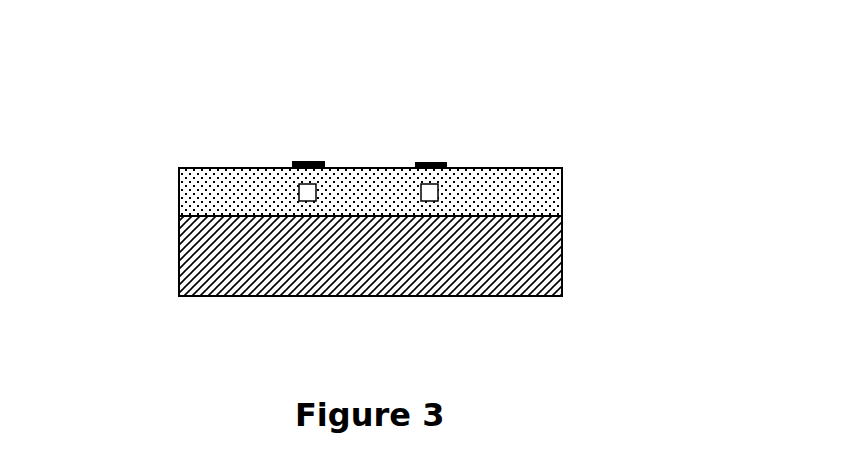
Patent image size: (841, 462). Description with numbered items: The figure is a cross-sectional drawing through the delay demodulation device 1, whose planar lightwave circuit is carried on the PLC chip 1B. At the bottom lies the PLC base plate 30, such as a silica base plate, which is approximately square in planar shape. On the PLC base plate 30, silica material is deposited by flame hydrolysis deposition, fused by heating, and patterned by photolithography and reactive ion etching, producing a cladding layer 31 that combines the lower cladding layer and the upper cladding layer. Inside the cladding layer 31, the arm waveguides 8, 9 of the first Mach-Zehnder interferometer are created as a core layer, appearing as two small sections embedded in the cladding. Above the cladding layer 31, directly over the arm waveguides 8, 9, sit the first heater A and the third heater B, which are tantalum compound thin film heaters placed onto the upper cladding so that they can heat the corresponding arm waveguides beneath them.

The delay demodulation device 1 is at (205, 138).
The PLC chip 1B is at (168, 212).
The arm waveguide 8 is at (316, 192).
The arm waveguide 9 is at (438, 190).
The PLC base plate 30 is at (468, 296).
The cladding layer 31 is at (562, 190).
The first heater A is at (300, 161).
The third heater B is at (425, 162).